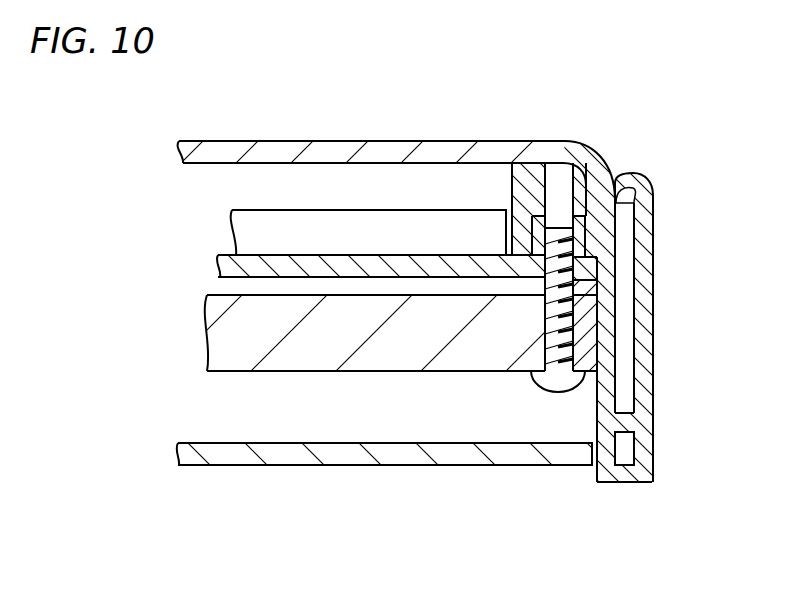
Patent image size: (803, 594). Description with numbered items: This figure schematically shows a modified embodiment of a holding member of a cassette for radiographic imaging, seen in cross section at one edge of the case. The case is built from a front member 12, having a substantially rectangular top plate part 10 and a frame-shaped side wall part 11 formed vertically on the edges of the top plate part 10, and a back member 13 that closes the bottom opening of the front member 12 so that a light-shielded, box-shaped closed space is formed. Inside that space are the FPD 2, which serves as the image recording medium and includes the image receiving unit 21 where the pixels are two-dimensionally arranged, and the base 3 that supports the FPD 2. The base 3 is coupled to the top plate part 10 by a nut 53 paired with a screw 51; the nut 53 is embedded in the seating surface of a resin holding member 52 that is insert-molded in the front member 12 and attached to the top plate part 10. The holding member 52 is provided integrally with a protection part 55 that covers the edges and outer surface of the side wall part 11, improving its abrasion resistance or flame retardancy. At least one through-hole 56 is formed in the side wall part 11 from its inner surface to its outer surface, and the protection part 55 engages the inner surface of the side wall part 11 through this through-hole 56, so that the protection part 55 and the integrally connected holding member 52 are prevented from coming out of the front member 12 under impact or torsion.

The top plate part 10 is at (338, 151).
The side wall part 11 is at (623, 353).
The front member 12 is at (610, 152).
The back member 13 is at (466, 476).
The FPD 2 is at (372, 204).
The image receiving unit 21 is at (450, 232).
The base 3 is at (402, 380).
The screw 51 is at (562, 382).
The holding member 52 is at (625, 205).
The nut 53 is at (540, 218).
The protection part 55 is at (645, 267).
The through-hole 56 is at (633, 432).